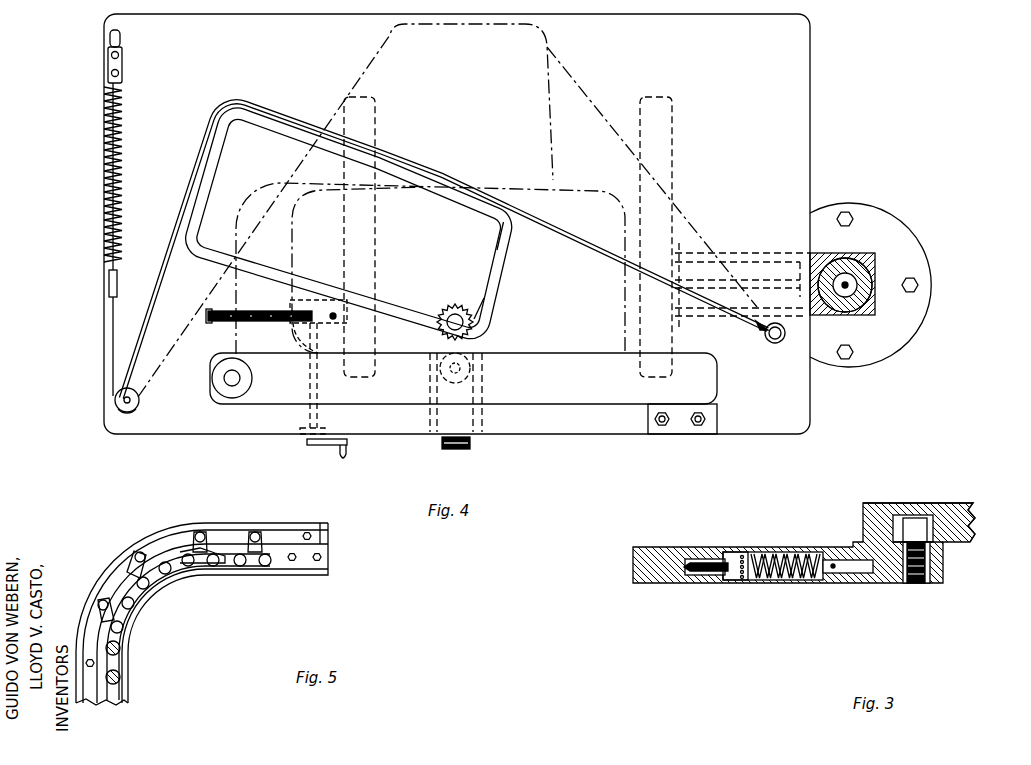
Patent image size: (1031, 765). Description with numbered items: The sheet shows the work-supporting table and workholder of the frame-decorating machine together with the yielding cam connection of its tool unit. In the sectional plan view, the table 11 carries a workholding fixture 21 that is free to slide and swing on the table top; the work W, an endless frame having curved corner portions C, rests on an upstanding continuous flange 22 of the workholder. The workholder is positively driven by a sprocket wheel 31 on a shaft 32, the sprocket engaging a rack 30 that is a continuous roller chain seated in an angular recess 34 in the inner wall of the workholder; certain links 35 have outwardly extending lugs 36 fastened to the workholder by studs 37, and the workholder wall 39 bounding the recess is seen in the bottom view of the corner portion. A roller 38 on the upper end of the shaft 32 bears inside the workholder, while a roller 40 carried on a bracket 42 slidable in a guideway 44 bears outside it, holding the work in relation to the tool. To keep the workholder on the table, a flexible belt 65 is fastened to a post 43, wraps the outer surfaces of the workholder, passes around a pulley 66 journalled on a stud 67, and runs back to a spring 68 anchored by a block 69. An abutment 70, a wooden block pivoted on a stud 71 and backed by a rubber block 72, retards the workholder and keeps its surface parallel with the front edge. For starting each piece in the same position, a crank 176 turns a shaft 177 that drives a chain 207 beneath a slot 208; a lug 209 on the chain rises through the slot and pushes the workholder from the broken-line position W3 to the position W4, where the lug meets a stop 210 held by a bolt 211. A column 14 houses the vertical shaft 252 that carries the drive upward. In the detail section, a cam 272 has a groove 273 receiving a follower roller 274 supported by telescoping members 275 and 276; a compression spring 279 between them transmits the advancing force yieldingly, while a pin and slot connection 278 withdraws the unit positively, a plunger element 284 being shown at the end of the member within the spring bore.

In FIG. 4, the table 11 is at (457, 224).
In FIG. 4, the column 14 is at (850, 314).
In FIG. 4, the vertical shaft 252 is at (868, 273).
In FIG. 4, the workholding fixture 21 is at (506, 259).
In FIG. 5, the workholding fixture 21 is at (93, 577).
In FIG. 4, the flange 22 is at (496, 300).
In FIG. 4, the work W is at (491, 277).
In FIG. 4, the roller 38 is at (477, 323).
In FIG. 4, the sprocket wheel 31 is at (442, 306).
In FIG. 4, the shaft 32 is at (457, 314).
In FIG. 4, the roller 40 is at (440, 377).
In FIG. 4, the bracket 42 is at (437, 442).
In FIG. 4, the guideway 44 is at (484, 434).
In FIG. 4, the post 43 is at (771, 344).
In FIG. 4, the flexible belt 65 is at (593, 105).
In FIG. 4, the pulley 66 is at (115, 397).
In FIG. 4, the stud 67 is at (122, 412).
In FIG. 4, the spring 68 is at (122, 130).
In FIG. 4, the block 69 is at (124, 64).
In FIG. 4, the abutment 70 is at (463, 378).
In FIG. 4, the stud 71 is at (225, 384).
In FIG. 4, the rubber block 72 is at (719, 419).
In FIG. 4, the chain 207 is at (210, 319).
In FIG. 4, the slot 208 is at (212, 310).
In FIG. 4, the lug 209 is at (211, 315).
In FIG. 4, the stop 210 is at (306, 331).
In FIG. 4, the bolt 211 is at (333, 312).
In FIG. 4, the crank 176 is at (329, 447).
In FIG. 4, the shaft 177 is at (309, 415).
In FIG. 4, the curved corner portion C is at (243, 125).
In FIG. 4, the broken-line work position W3 is at (256, 194).
In FIG. 4, the work position W4 is at (293, 248).
In FIG. 5, the rack 30 is at (165, 578).
In FIG. 5, the angular recess 34 is at (330, 546).
In FIG. 5, the links 35 is at (212, 548).
In FIG. 5, the lugs 36 is at (199, 532).
In FIG. 5, the studs 37 is at (205, 530).
In FIG. 5, the inner track wall 39 is at (296, 576).
In FIG. 3, the cam 272 is at (975, 526).
In FIG. 3, the groove 273 is at (922, 516).
In FIG. 3, the follower roller 274 is at (950, 541).
In FIG. 3, the telescoping member 275 is at (885, 583).
In FIG. 3, the telescoping member 276 is at (737, 556).
In FIG. 3, the pin and slot connection 278 is at (838, 578).
In FIG. 3, the compression spring 279 is at (790, 556).
In FIG. 3, the plunger 284 is at (737, 582).